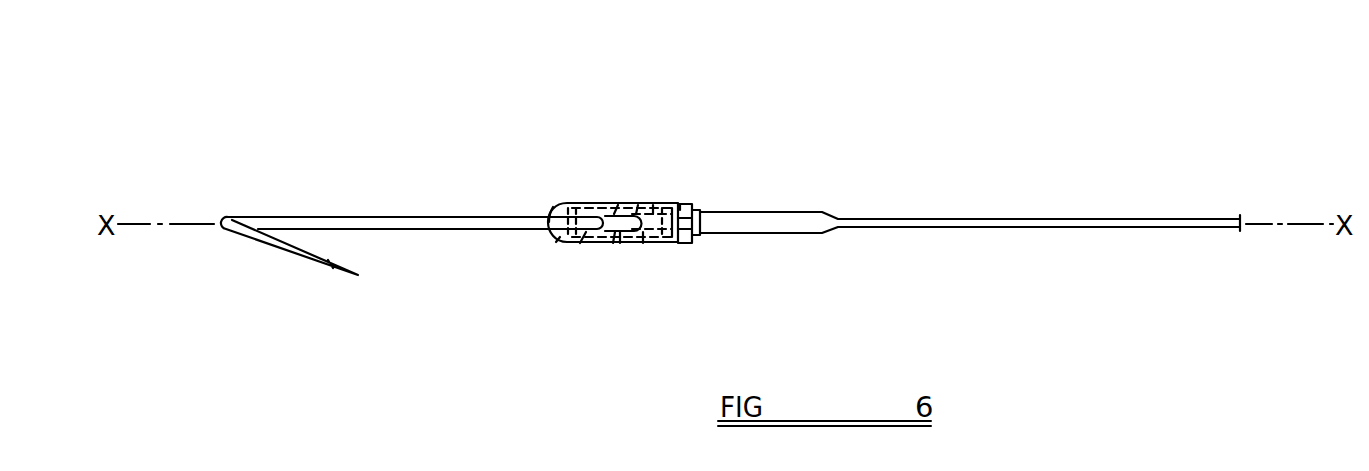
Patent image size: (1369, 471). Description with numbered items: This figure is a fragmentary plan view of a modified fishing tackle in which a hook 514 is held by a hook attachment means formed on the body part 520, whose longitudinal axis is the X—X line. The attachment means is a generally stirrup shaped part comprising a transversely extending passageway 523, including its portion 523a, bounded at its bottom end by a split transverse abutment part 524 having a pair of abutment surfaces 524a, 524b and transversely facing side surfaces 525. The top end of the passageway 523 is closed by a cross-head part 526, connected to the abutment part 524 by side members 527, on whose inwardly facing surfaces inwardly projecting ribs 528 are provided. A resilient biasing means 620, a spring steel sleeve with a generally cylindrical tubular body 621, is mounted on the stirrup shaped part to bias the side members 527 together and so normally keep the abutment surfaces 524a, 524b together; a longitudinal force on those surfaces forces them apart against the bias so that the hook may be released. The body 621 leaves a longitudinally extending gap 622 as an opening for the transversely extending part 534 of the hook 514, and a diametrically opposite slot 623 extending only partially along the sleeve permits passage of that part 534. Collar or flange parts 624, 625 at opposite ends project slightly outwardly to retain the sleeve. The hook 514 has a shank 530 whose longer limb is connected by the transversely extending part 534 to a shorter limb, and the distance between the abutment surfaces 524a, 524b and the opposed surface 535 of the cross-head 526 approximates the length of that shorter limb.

The hook 514 is at (313, 217).
The shank 530 is at (425, 217).
The transversely extending part 534 is at (583, 203).
The inwardly projecting ribs 528 is at (598, 203).
The side members 527 is at (612, 203).
The abutment surface 524b is at (568, 203).
The transversely facing side surfaces 525 is at (576, 203).
The split transverse abutment part 524 is at (553, 207).
The abutment surface 524a is at (580, 243).
The passage portion 523a is at (619, 205).
The transversely extending passageway 523 is at (638, 205).
The resilient biasing means 620 is at (654, 205).
The cross-head part 526 is at (680, 204).
The collar or flange part 624 is at (556, 242).
The slot 623 is at (613, 243).
The opposed surface 535 is at (620, 243).
The cylindrical tubular body 621 is at (643, 243).
The longitudinally extending gap 622 is at (663, 243).
The collar or flange part 625 is at (700, 212).
The body part 520 is at (810, 232).